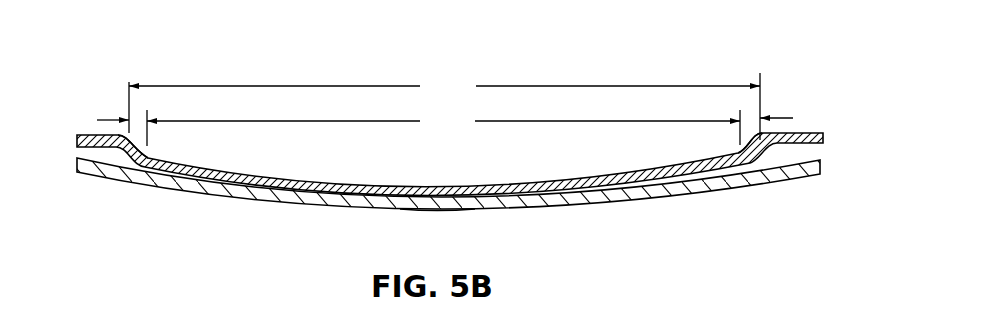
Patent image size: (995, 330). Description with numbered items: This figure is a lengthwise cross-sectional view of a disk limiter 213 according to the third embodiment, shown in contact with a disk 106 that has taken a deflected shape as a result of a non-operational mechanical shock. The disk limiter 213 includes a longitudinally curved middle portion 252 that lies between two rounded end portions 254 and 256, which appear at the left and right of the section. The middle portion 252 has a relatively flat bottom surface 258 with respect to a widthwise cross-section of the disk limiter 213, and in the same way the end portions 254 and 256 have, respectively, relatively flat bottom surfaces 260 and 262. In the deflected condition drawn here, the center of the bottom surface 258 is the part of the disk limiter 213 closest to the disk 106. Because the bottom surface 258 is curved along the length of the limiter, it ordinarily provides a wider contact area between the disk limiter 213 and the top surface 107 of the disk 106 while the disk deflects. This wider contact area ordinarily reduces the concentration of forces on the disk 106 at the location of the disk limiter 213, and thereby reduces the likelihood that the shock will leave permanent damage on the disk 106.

The disk 106 is at (803, 175).
The top surface 107 is at (109, 154).
The disk limiter 213 is at (444, 105).
The middle portion 252 is at (443, 127).
The end portion 254 is at (89, 120).
The end portion 256 is at (798, 118).
The bottom surface 258 is at (442, 198).
The bottom surface 260 is at (136, 158).
The bottom surface 262 is at (762, 160).